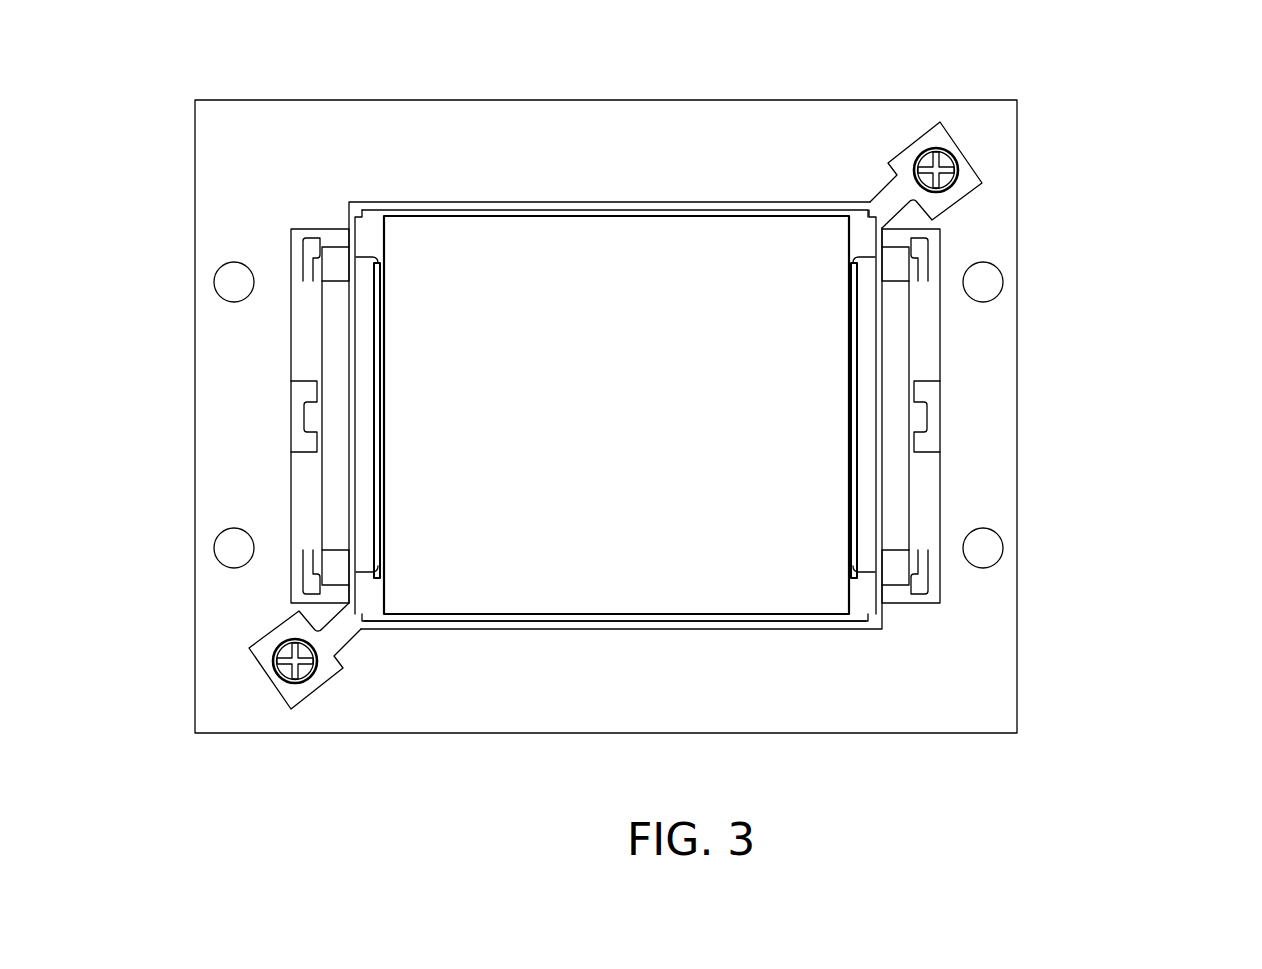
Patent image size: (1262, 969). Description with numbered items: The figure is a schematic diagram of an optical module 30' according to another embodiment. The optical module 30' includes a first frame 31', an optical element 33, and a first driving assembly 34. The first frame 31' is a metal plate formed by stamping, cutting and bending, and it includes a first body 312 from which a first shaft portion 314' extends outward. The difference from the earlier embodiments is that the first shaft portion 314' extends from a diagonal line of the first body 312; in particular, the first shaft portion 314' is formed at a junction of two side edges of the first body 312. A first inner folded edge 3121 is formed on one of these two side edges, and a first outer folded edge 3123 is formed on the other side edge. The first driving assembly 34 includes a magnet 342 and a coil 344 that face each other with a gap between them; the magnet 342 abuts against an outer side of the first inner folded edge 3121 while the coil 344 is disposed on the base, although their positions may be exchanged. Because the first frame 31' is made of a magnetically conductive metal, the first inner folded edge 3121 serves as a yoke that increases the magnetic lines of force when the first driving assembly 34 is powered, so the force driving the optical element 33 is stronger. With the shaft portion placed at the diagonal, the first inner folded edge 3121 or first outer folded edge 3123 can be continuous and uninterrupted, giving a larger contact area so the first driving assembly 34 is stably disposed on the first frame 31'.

The optical module 30' is at (662, 428).
The first frame 31' is at (668, 420).
The first body 312 is at (497, 420).
The first shaft portion 314' is at (615, 420).
The first inner folded edge 3121 is at (384, 353).
The first outer folded edge 3123 is at (462, 615).
The optical element 33 is at (632, 243).
The first driving assembly 34 is at (719, 416).
The coil 344 is at (897, 473).
The magnet 342 is at (867, 510).